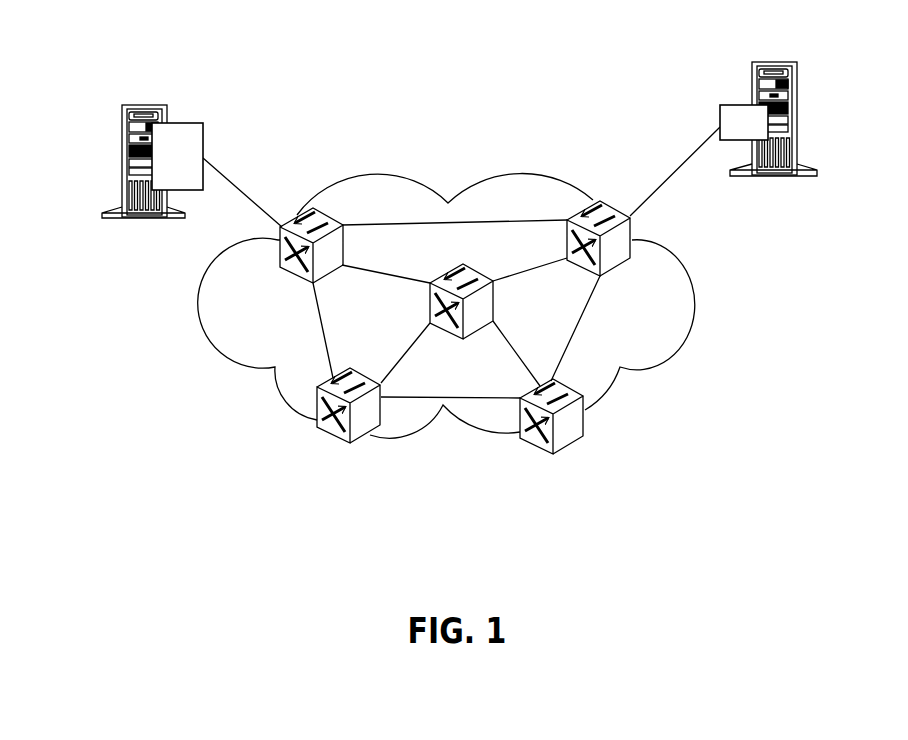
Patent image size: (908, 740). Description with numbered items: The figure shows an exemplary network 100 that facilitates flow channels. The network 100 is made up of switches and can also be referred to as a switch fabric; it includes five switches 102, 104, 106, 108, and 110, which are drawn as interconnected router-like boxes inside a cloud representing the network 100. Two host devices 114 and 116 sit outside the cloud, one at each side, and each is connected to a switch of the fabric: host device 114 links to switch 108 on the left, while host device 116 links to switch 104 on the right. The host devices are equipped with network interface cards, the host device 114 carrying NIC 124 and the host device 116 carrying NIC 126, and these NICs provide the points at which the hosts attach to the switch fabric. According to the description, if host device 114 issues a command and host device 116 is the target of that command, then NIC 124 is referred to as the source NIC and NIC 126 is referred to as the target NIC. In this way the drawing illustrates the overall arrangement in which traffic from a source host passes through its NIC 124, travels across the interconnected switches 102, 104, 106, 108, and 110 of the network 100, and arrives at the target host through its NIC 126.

The network 100 is at (695, 304).
The switch 102 is at (555, 454).
The switch 104 is at (633, 258).
The switch 106 is at (461, 267).
The switch 108 is at (280, 266).
The switch 110 is at (348, 366).
The host device 114 is at (122, 161).
The host device 116 is at (797, 118).
The NIC 124 is at (160, 183).
The NIC 126 is at (727, 134).